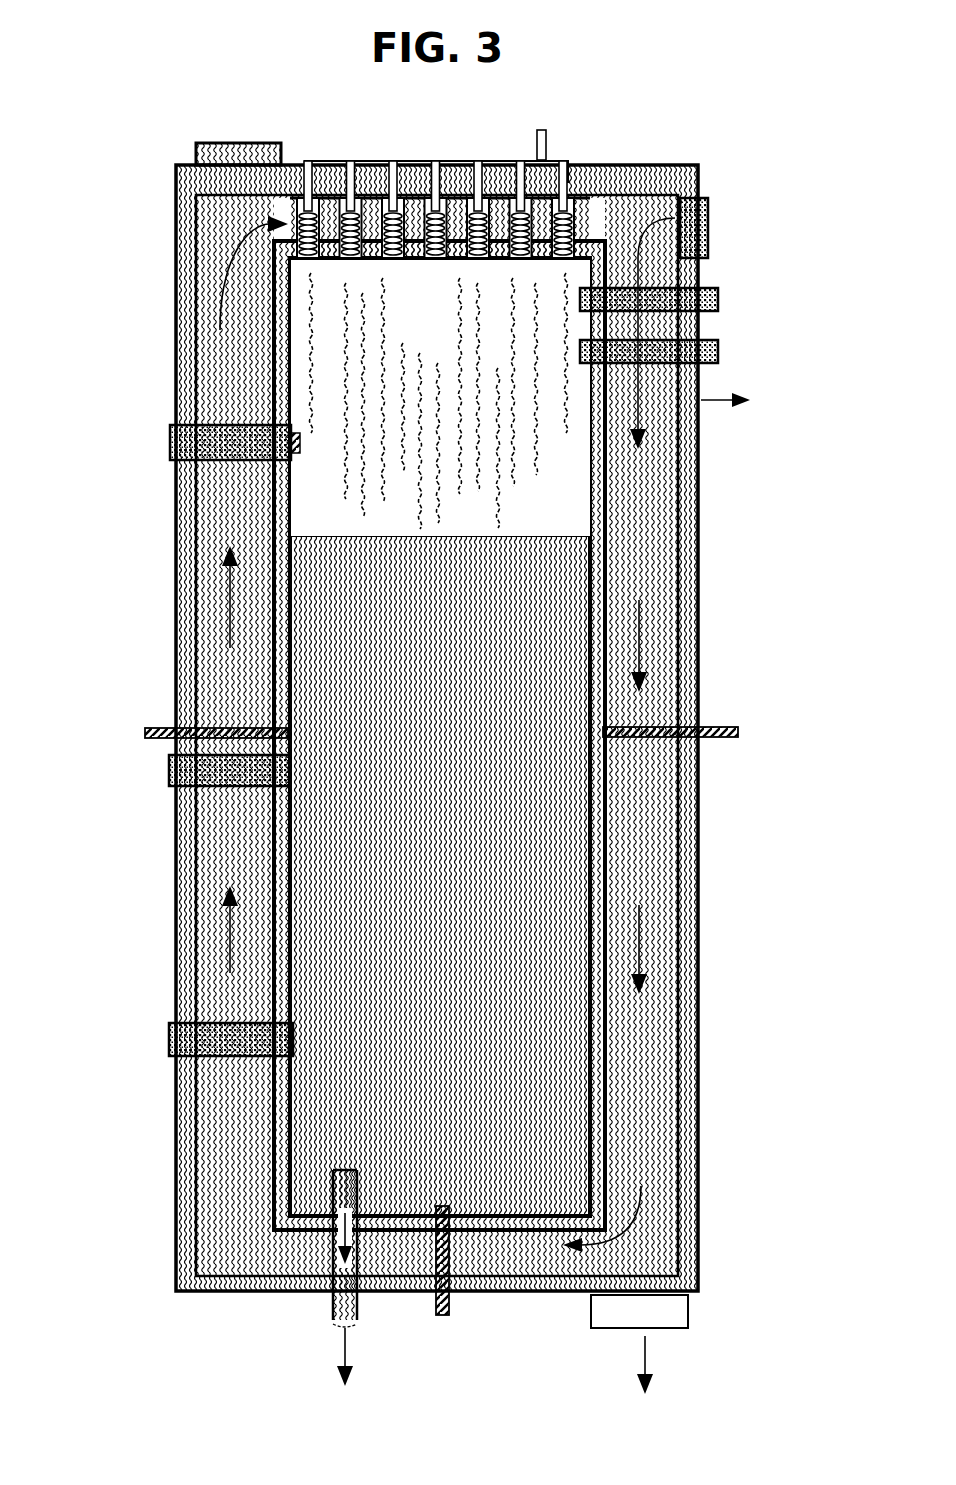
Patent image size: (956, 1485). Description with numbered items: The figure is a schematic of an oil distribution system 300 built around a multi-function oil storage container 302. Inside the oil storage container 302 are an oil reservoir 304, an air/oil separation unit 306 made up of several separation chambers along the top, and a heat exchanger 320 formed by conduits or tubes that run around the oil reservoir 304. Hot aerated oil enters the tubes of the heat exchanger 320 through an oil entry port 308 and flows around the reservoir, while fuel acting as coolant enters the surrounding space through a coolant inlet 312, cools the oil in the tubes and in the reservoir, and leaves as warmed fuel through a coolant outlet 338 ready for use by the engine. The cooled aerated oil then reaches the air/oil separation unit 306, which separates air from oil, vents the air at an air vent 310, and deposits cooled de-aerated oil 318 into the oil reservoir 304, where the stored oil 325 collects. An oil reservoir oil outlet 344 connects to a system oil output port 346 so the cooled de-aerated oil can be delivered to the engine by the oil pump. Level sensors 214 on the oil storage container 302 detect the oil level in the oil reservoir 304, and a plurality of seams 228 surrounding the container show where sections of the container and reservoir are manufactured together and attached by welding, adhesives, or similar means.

The oil distribution system 300 is at (648, 98).
The oil storage container 302 is at (695, 532).
The oil reservoir 304 is at (556, 519).
The air/oil separation unit 306 is at (563, 124).
The oil entry port 308 is at (700, 232).
The air vent 310 is at (538, 143).
The coolant inlet 312 is at (208, 135).
The vapor bubbles 318 is at (554, 253).
The heat exchanger 320 is at (690, 890).
The liquid 325 is at (536, 1029).
The coolant outlet 338 is at (680, 1302).
The oil reservoir oil outlet 344 is at (340, 1162).
The system oil output port 346 is at (350, 1298).
The level sensors 214 is at (161, 434).
The seams 228 is at (145, 718).